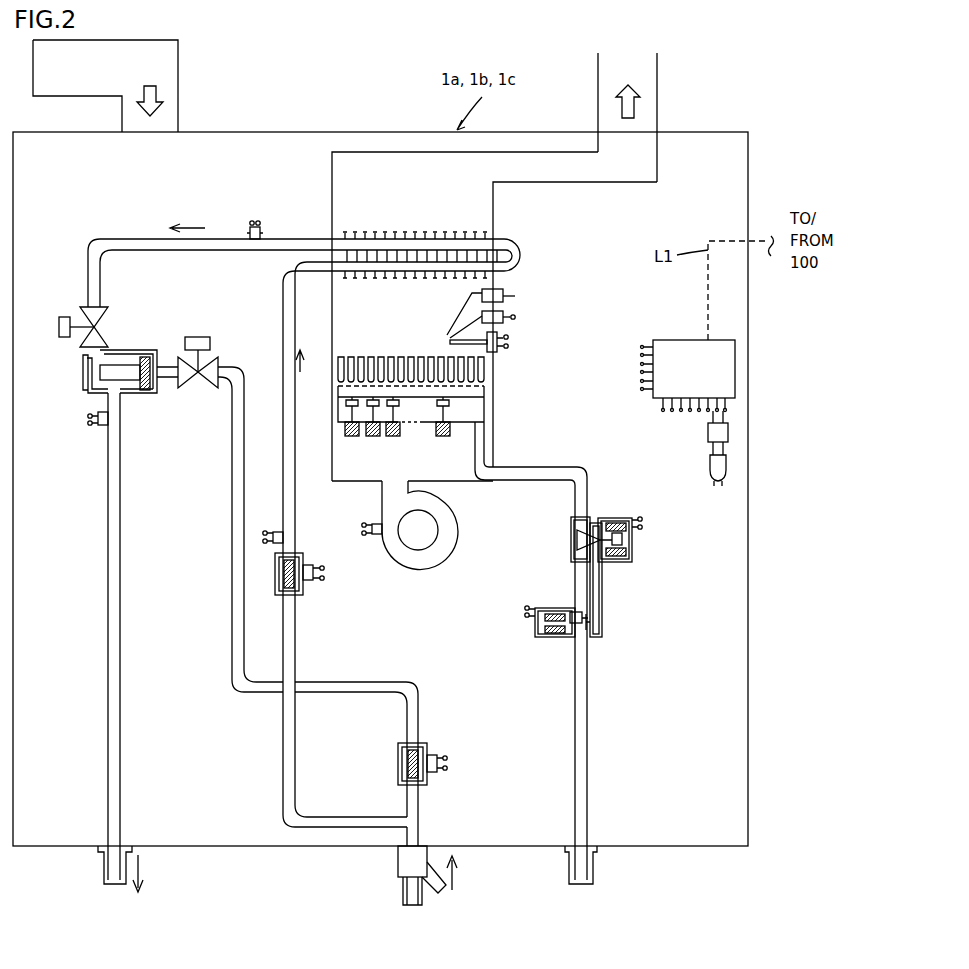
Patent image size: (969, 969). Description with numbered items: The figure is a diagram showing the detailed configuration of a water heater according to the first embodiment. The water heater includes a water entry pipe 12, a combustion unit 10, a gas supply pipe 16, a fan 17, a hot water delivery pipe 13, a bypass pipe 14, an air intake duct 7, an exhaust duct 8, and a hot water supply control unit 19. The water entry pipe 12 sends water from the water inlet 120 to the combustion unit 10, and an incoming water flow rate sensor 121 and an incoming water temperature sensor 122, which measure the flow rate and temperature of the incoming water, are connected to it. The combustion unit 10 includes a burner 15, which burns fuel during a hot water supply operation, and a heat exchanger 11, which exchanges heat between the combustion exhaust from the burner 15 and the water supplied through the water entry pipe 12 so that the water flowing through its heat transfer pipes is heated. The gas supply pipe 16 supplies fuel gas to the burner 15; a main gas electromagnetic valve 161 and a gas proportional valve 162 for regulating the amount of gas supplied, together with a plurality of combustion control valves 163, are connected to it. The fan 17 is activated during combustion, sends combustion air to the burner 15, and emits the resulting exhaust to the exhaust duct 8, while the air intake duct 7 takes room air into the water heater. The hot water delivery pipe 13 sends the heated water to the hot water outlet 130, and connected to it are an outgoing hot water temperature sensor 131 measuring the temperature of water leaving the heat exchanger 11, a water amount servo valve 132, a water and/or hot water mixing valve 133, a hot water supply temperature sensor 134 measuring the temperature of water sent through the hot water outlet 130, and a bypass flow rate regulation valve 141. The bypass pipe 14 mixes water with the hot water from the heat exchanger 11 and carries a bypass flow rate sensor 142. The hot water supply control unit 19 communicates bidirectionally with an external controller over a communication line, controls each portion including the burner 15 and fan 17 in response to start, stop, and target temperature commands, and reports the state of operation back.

The air intake duct 7 is at (178, 82).
The exhaust duct 8 is at (657, 82).
The combustion unit 10 is at (332, 161).
The heat exchanger 11 is at (453, 236).
The water entry pipe 12 is at (296, 735).
The hot water delivery pipe 13 is at (106, 622).
The bypass pipe 14 is at (245, 446).
The burner 15 is at (434, 419).
The gas supply pipe 16 is at (571, 679).
The fan 17 is at (418, 568).
The hot water supply control unit 19 is at (652, 336).
The water inlet 120 is at (398, 868).
The incoming water flow rate sensor 121 is at (304, 590).
The incoming water temperature sensor 122 is at (278, 530).
The hot water outlet 130 is at (104, 866).
The outgoing hot water temperature sensor 131 is at (248, 232).
The water amount servo valve 132 is at (108, 317).
The water and/or hot water mixing valve 133 is at (84, 373).
The hot water supply temperature sensor 134 is at (97, 426).
The bypass flow rate regulation valve 141 is at (208, 386).
The bypass flow rate sensor 142 is at (431, 748).
The main gas electromagnetic valve 161 is at (541, 608).
The gas proportional valve 162 is at (634, 556).
The combustion control valves 163 is at (352, 437).